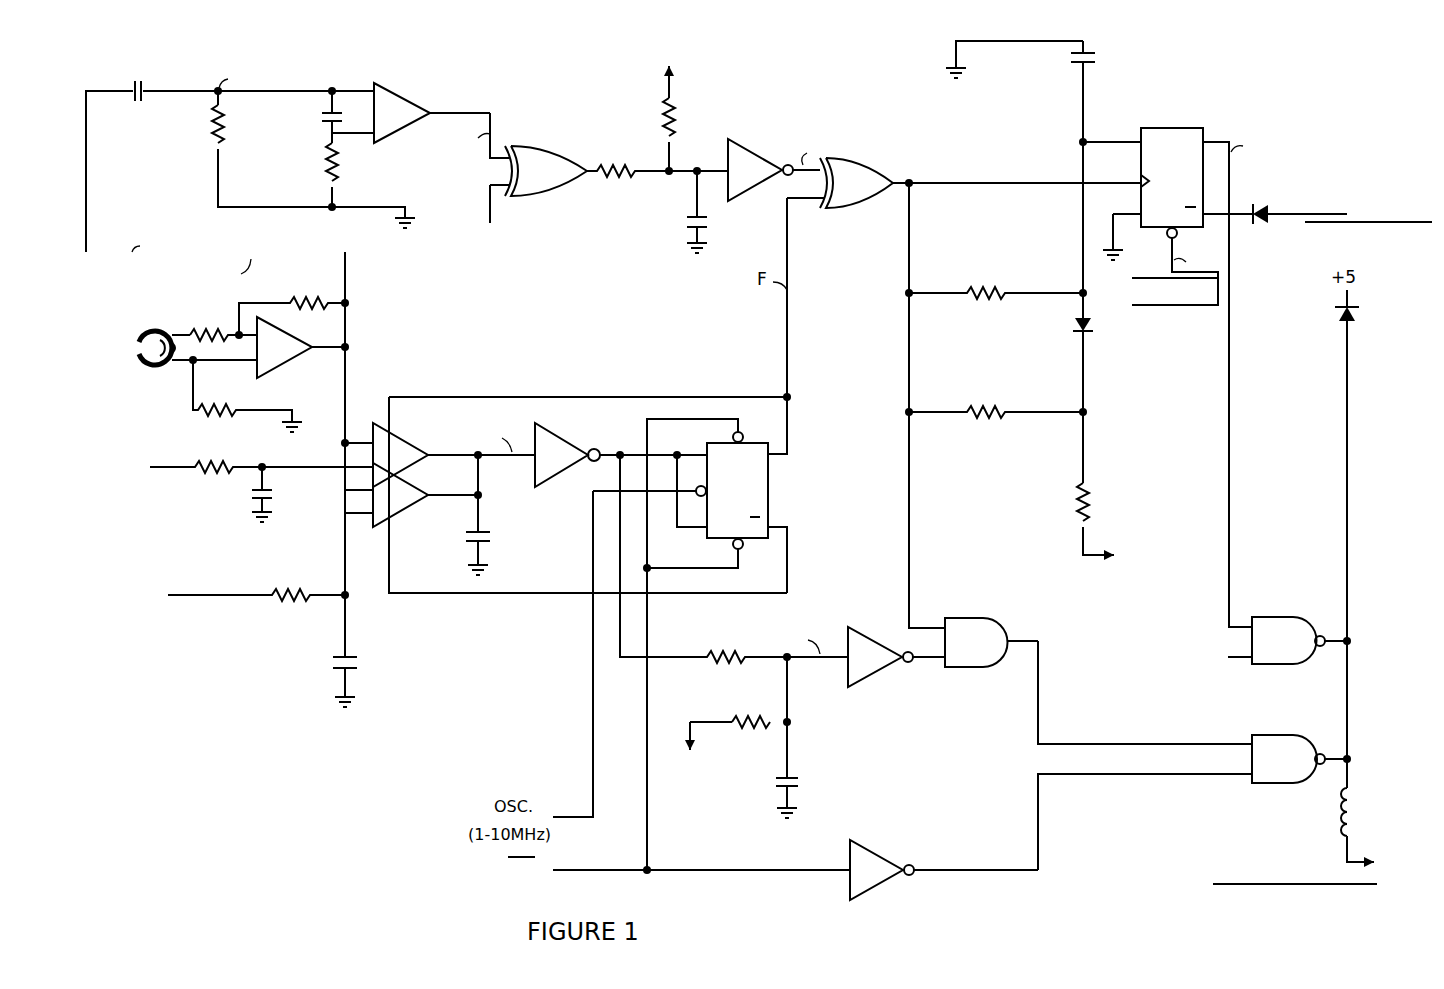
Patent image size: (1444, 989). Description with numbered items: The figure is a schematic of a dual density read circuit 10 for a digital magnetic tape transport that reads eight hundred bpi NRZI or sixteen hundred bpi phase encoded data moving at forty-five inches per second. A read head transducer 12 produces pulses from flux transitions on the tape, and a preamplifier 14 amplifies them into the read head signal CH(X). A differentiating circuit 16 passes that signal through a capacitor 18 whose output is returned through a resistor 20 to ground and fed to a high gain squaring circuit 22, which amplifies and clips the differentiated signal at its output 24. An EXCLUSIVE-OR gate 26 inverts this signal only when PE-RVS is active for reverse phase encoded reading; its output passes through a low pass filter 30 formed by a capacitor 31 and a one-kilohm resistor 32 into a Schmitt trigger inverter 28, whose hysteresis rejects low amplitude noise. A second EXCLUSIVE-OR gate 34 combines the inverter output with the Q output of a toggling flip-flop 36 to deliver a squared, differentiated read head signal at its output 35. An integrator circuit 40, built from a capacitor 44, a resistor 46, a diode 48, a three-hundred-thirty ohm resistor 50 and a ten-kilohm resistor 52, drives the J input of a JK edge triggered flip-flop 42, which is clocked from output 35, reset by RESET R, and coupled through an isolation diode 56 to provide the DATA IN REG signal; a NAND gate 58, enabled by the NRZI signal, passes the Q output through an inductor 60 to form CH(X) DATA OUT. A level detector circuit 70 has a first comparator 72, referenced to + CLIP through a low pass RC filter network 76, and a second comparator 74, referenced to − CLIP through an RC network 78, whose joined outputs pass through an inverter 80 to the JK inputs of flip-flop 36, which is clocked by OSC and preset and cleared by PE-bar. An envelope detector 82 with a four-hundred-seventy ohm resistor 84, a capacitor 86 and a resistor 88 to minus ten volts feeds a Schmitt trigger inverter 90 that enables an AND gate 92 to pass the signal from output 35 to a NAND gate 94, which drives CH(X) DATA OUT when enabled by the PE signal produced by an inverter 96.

The dual density read circuit 10 is at (928, 60).
The read head transducer 12 is at (138, 330).
The preamplifier 14 is at (263, 303).
The differentiating circuit 16 is at (263, 74).
The capacitor 18 is at (134, 99).
The 470 ohm resistor 20 is at (218, 150).
The high gain squaring circuit 22 is at (420, 86).
The output of squaring circuit 24 is at (488, 113).
The EXCLUSIVE-OR gate 26 is at (533, 128).
The inverter 28 is at (758, 149).
The low pass filter 30 is at (715, 113).
The capacitor 31 is at (689, 215).
The resistor 32 is at (659, 128).
The second EXCLUSIVE-OR gate 34 is at (854, 160).
The output of second EXCLUSIVE-OR gate 35 is at (909, 182).
The toggling flip-flop 36 is at (748, 436).
The integrator circuit 40 is at (1128, 117).
The JK edge triggered flip-flop 42 is at (1196, 128).
The capacitor 44 is at (1090, 62).
The resistor 46 is at (938, 292).
The diode 48 is at (1077, 323).
The resistor 50 is at (997, 416).
The resistor 52 is at (1076, 491).
The isolation diode 56 is at (1258, 211).
The NAND gate 58 is at (1262, 617).
The inductor 60 is at (1355, 813).
The level detector circuit 70 is at (339, 431).
The first comparator 72 is at (400, 433).
The second comparator 74 is at (396, 516).
The low pass RC filter network 76 is at (238, 513).
The RC network 78 is at (309, 649).
The inverter 80 is at (548, 433).
The envelope detector 82 is at (744, 773).
The resistor 84 is at (710, 663).
The capacitor 86 is at (794, 778).
The resistor 88 is at (756, 728).
The inverter 90 is at (866, 632).
The AND gate 92 is at (960, 618).
The NAND gate 94 is at (1268, 735).
The inverter 96 is at (878, 850).